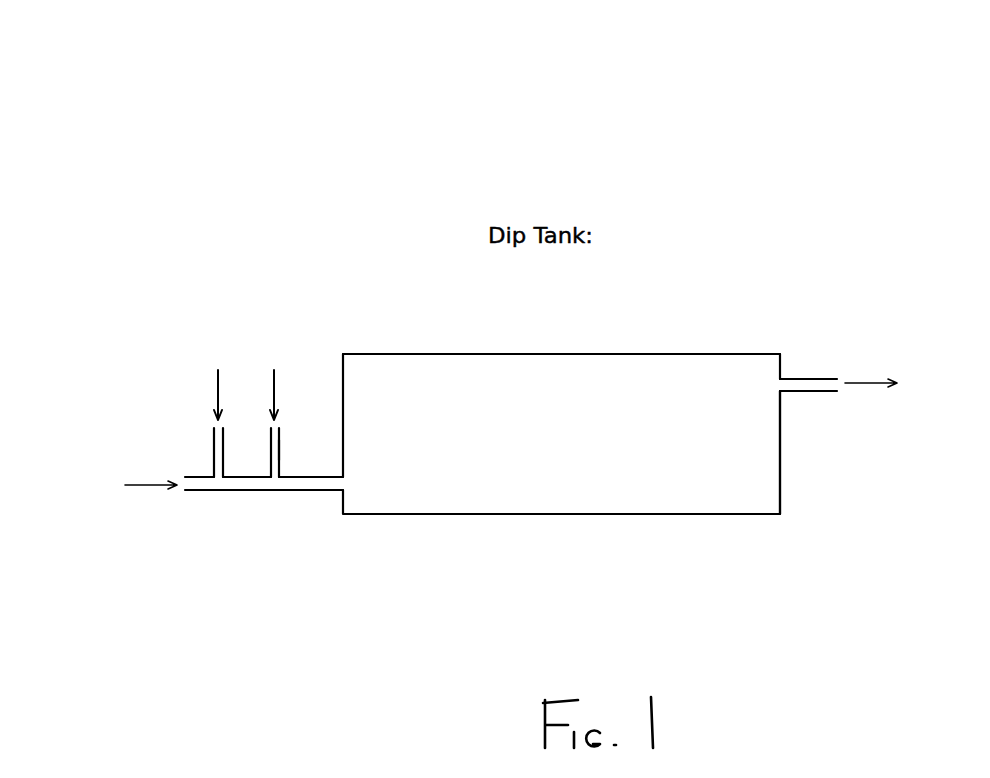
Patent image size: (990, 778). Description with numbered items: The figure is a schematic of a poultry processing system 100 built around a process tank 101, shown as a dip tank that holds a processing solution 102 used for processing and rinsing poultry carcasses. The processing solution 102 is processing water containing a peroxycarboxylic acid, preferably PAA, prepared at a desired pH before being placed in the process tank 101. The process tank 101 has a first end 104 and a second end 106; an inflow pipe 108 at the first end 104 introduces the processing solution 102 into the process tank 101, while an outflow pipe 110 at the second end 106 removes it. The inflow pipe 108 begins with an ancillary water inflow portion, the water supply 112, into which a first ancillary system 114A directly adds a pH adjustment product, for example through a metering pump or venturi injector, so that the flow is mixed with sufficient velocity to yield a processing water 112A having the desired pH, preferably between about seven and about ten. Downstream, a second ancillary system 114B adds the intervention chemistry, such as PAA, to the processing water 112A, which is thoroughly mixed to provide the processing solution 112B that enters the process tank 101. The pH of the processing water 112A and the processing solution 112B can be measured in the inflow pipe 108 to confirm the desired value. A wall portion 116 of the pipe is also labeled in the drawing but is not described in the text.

The poultry processing system 100 is at (906, 22).
The process tank 101 is at (675, 514).
The processing solution 102 is at (530, 458).
The first end 104 is at (343, 367).
The second end 106 is at (781, 473).
The inflow pipe 108 is at (298, 492).
The outflow pipe 110 is at (817, 378).
The water supply 112 is at (180, 478).
The processing water 112A is at (235, 480).
The processing solution 112B is at (323, 480).
The ancillary system 114A is at (218, 360).
The ancillary system 114B is at (246, 366).
The pipe wall 116 is at (279, 445).